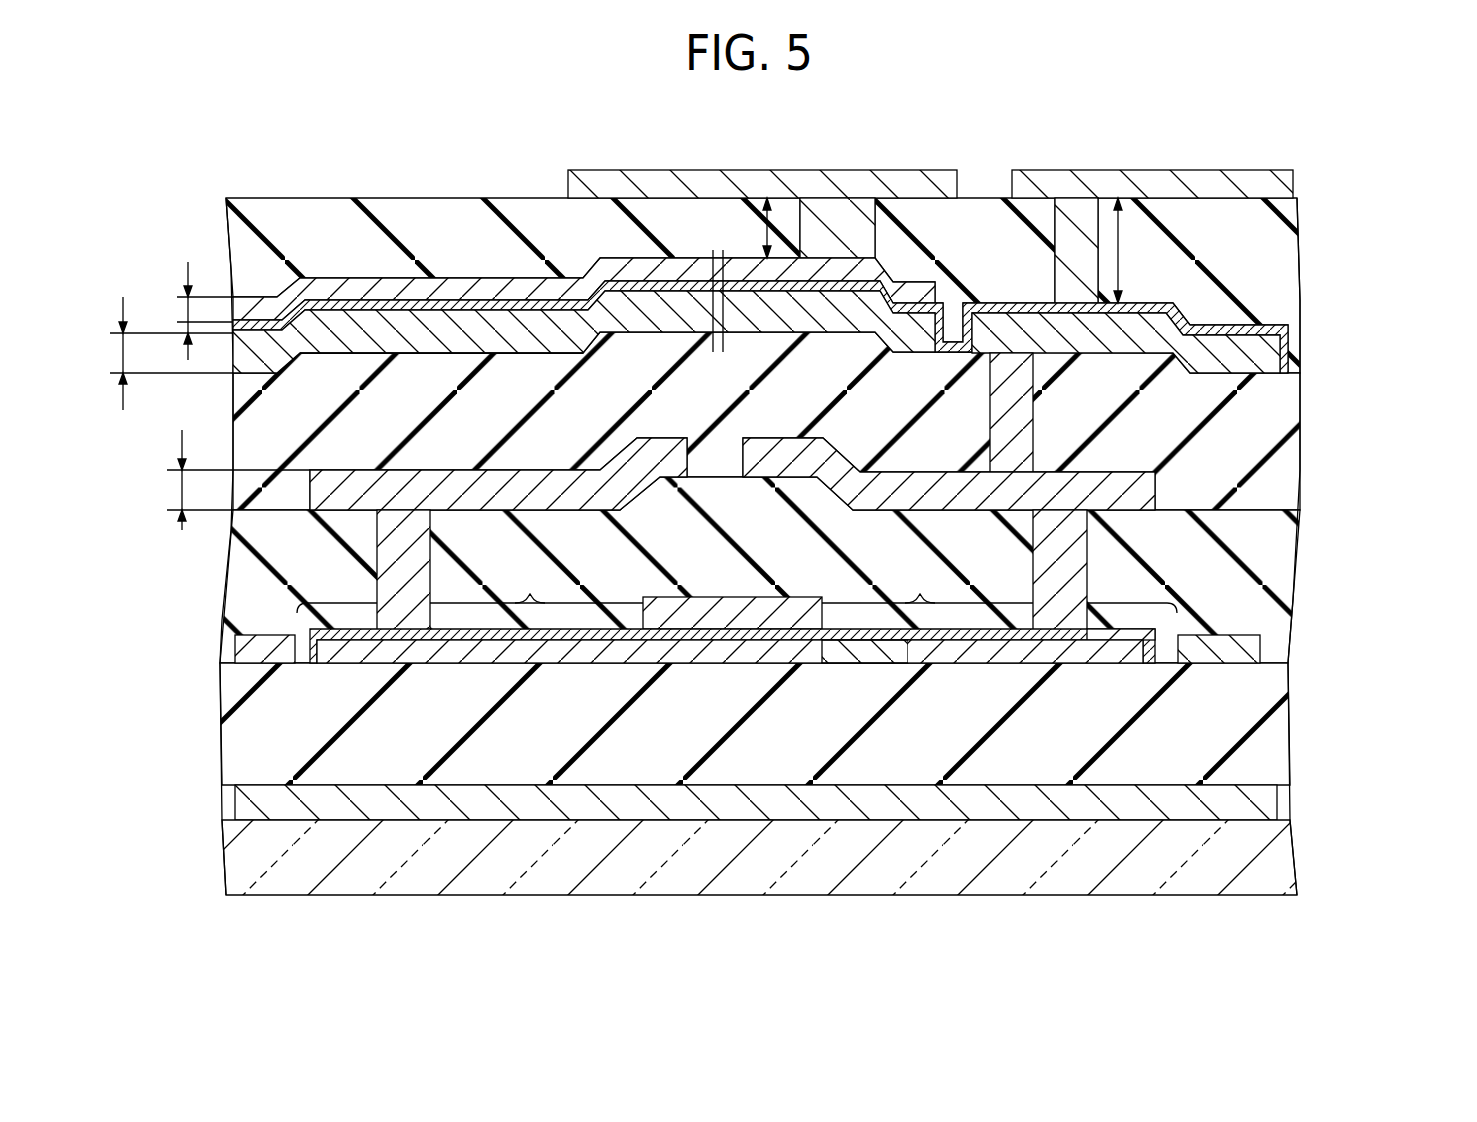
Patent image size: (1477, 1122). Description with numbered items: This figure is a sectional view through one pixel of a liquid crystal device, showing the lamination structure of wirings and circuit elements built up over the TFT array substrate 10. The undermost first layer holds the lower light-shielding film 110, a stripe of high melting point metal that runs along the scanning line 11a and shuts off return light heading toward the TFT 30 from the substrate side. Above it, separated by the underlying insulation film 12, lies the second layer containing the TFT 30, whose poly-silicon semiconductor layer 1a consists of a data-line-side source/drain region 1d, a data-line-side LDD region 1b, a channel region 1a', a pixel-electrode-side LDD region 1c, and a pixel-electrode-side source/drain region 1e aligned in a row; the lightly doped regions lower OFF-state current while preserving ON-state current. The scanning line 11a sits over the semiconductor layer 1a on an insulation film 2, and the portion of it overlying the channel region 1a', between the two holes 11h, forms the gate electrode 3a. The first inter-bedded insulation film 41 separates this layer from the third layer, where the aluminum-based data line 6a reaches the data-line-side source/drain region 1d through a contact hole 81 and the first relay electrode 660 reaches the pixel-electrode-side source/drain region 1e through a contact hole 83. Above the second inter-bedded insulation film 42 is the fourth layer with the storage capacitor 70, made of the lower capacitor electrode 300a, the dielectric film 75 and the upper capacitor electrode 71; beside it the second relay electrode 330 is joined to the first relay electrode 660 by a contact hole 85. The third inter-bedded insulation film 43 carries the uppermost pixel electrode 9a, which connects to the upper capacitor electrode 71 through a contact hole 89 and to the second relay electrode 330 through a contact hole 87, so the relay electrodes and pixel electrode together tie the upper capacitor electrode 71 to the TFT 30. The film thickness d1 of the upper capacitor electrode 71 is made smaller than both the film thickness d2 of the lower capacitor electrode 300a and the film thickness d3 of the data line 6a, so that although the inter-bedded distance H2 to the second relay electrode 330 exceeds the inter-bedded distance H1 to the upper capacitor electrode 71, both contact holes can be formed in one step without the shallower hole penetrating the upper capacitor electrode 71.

The pixel electrode 9a is at (1063, 183).
The contact hole 87 is at (1078, 250).
The contact hole 89 is at (872, 222).
The upper capacitor electrode 71 is at (387, 281).
The dielectric film 75 is at (1005, 303).
The storage capacitor 70 is at (703, 305).
The lower capacitor electrode 300a is at (423, 348).
The second relay electrode 330 is at (1262, 367).
The third inter-bedded insulation film 43 is at (1285, 265).
The second inter-bedded insulation film 42 is at (1283, 470).
The first inter-bedded insulation film 41 is at (1285, 558).
The contact hole 85 is at (1023, 417).
The data line 6a is at (523, 470).
The first relay electrode 660 is at (762, 438).
The contact hole 81 is at (380, 535).
The contact hole 83 is at (1033, 543).
The holes 11h is at (737, 590).
The gate electrode 3a is at (715, 603).
The insulation film 2 is at (1130, 629).
The scanning line 11a is at (248, 634).
The semiconductor layer 1a is at (341, 686).
The data-line-side source/drain region 1d is at (467, 663).
The data-line-side LDD region 1b is at (603, 660).
The channel region 1a' is at (732, 681).
The pixel-electrode-side LDD region 1c is at (868, 660).
The pixel-electrode-side source/drain region 1e is at (1000, 660).
The TFT 30 is at (982, 723).
The underlying insulation film 12 is at (1283, 735).
The lower light-shielding film 110 is at (1270, 812).
The TFT array substrate 10 is at (1283, 858).
The film thickness d1 is at (171, 311).
The film thickness d2 is at (159, 353).
The film thickness d3 is at (228, 480).
The inter-bedded distance H1 is at (749, 228).
The inter-bedded distance H2 is at (1140, 250).